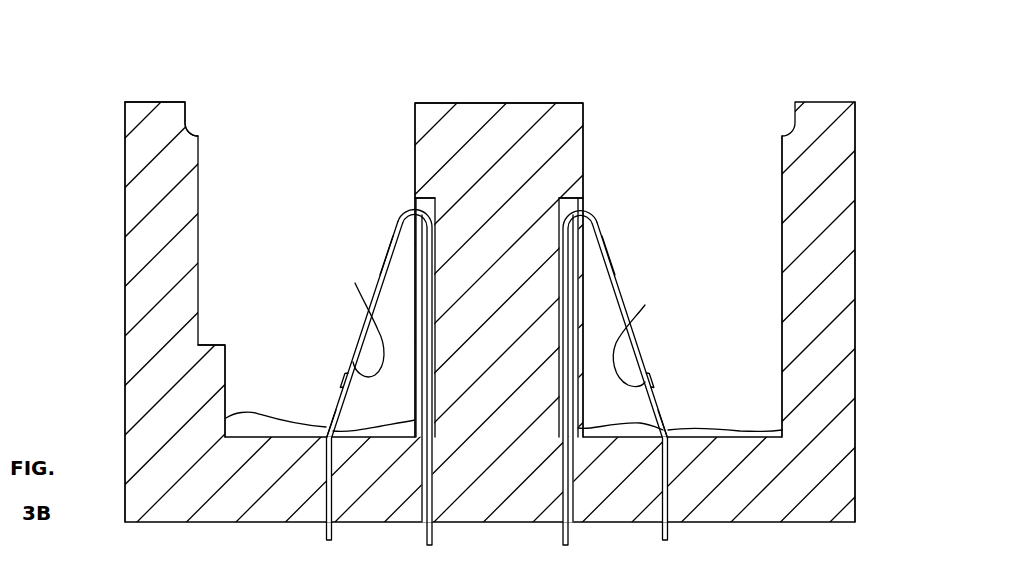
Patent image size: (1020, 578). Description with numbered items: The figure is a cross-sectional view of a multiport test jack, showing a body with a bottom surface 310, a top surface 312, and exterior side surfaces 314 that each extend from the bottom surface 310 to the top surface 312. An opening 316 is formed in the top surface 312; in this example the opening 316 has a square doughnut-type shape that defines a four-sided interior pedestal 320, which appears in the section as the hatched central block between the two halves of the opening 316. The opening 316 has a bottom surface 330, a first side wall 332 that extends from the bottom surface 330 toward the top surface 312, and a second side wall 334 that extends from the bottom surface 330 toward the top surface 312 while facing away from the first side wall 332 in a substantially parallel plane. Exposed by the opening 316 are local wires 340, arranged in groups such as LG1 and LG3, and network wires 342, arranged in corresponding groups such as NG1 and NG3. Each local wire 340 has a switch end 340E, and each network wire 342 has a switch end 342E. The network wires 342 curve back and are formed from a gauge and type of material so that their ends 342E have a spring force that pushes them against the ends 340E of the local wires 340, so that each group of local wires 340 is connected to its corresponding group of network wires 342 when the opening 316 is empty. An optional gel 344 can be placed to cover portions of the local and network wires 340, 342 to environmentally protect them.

The bottom surface 310 is at (172, 525).
The top surface 312 is at (142, 102).
The exterior side surfaces 314 is at (125, 266).
The opening 316 is at (326, 95).
The interior pedestal 320 is at (518, 102).
The bottom surface of opening 330 is at (260, 433).
The first side wall 332 is at (413, 381).
The second side wall 334 is at (578, 383).
The local wires 340 is at (323, 535).
The switch end of local wire 340E is at (343, 382).
The network wires 342 is at (425, 534).
The switch end of network wire 342E is at (498, 322).
The gel 344 is at (418, 205).
The first group of local wires LG1 is at (328, 419).
The third group of local wires LG3 is at (664, 419).
The first group of network wires NG1 is at (392, 253).
The third group of network wires NG3 is at (606, 253).